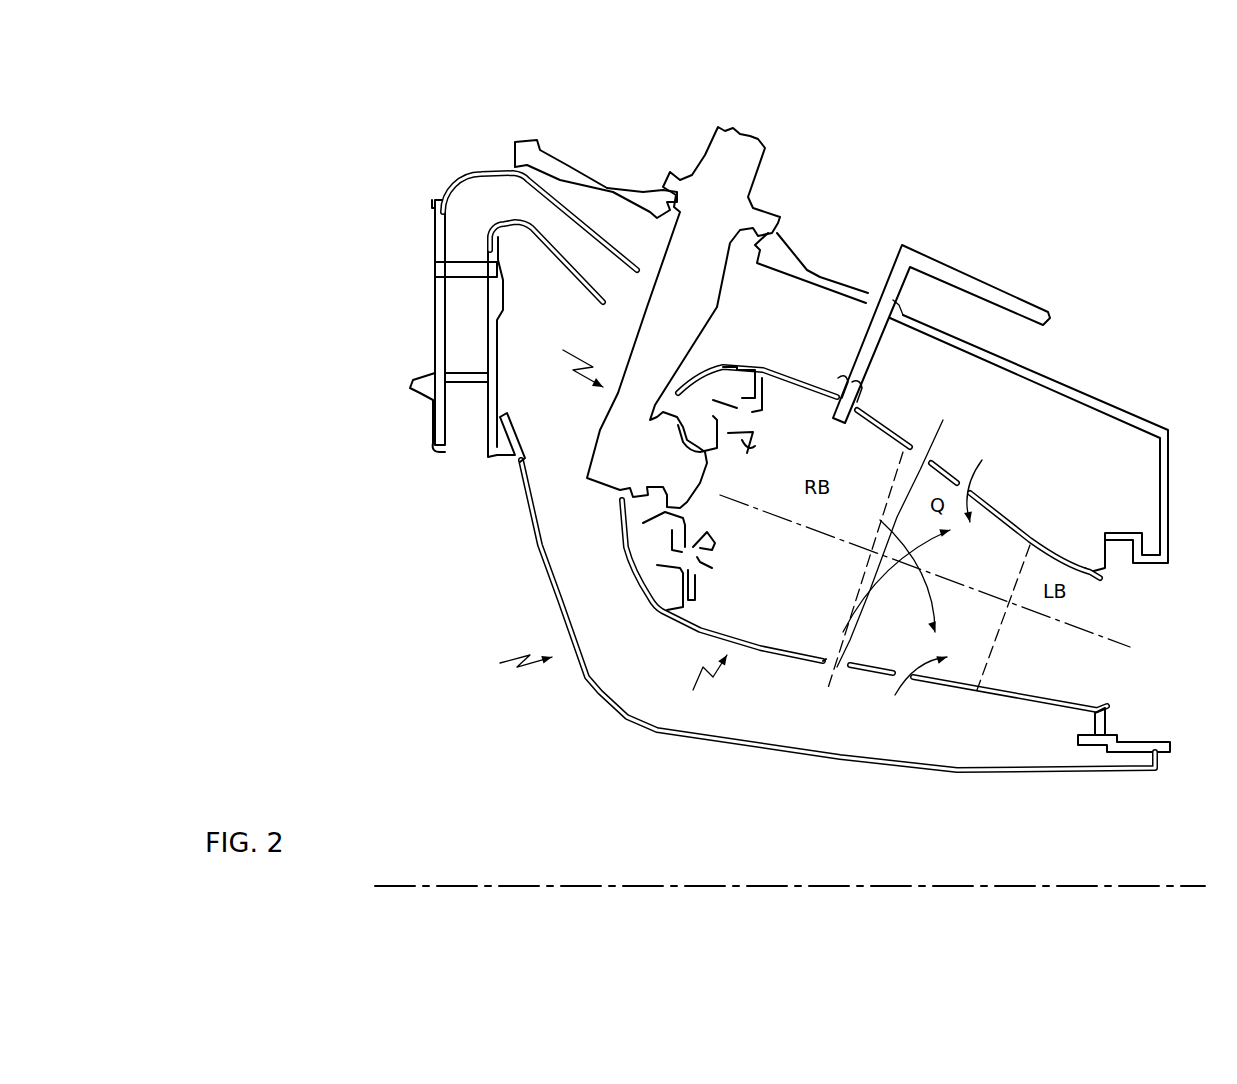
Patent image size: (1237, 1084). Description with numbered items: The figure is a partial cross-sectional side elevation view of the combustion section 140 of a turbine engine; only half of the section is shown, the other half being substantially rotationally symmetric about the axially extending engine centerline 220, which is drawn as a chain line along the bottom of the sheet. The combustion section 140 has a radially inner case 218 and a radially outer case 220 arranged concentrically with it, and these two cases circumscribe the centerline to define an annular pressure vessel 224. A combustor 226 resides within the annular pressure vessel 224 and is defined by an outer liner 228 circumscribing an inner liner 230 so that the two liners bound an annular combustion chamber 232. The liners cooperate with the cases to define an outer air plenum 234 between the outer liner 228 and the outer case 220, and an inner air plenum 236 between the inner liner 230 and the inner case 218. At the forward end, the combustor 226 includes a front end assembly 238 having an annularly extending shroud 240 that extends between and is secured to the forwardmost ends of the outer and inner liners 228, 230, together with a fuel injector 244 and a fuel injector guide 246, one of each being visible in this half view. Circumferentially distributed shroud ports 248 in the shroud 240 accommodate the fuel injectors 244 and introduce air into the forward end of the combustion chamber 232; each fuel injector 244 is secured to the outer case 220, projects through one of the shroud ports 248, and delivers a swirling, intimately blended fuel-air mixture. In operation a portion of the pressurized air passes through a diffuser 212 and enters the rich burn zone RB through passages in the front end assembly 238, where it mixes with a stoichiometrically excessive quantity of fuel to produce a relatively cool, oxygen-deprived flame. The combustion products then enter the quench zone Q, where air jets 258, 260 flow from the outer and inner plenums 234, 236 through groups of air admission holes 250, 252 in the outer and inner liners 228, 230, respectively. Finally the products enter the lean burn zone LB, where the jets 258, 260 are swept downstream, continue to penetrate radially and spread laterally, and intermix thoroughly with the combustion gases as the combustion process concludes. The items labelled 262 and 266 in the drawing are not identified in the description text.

The combustion section 140 is at (543, 408).
The diffuser 212 is at (584, 288).
The radially inner case 218 is at (706, 748).
The radially outer case 220 is at (1058, 365).
The annular pressure vessel 224 is at (600, 690).
The combustor 226 is at (698, 686).
The outer liner 228 is at (785, 373).
The inner liner 230 is at (796, 664).
The annular combustion chamber 232 is at (817, 444).
The outer air plenum 234 is at (940, 388).
The inner air plenum 236 is at (905, 748).
The front end assembly 238 is at (561, 361).
The shroud 240 is at (620, 543).
The fuel injector 244 is at (600, 418).
The fuel injector guide 246 is at (700, 436).
The shroud port 248 is at (620, 500).
The air admission holes in the outer liner 250 is at (940, 458).
The air admission holes in the inner liner 252 is at (846, 668).
The air jet from outer plenum 258 is at (897, 484).
The air jet from inner plenum 260 is at (848, 600).
The support strut 262 is at (993, 288).
The engine centerline 266 is at (1104, 616).